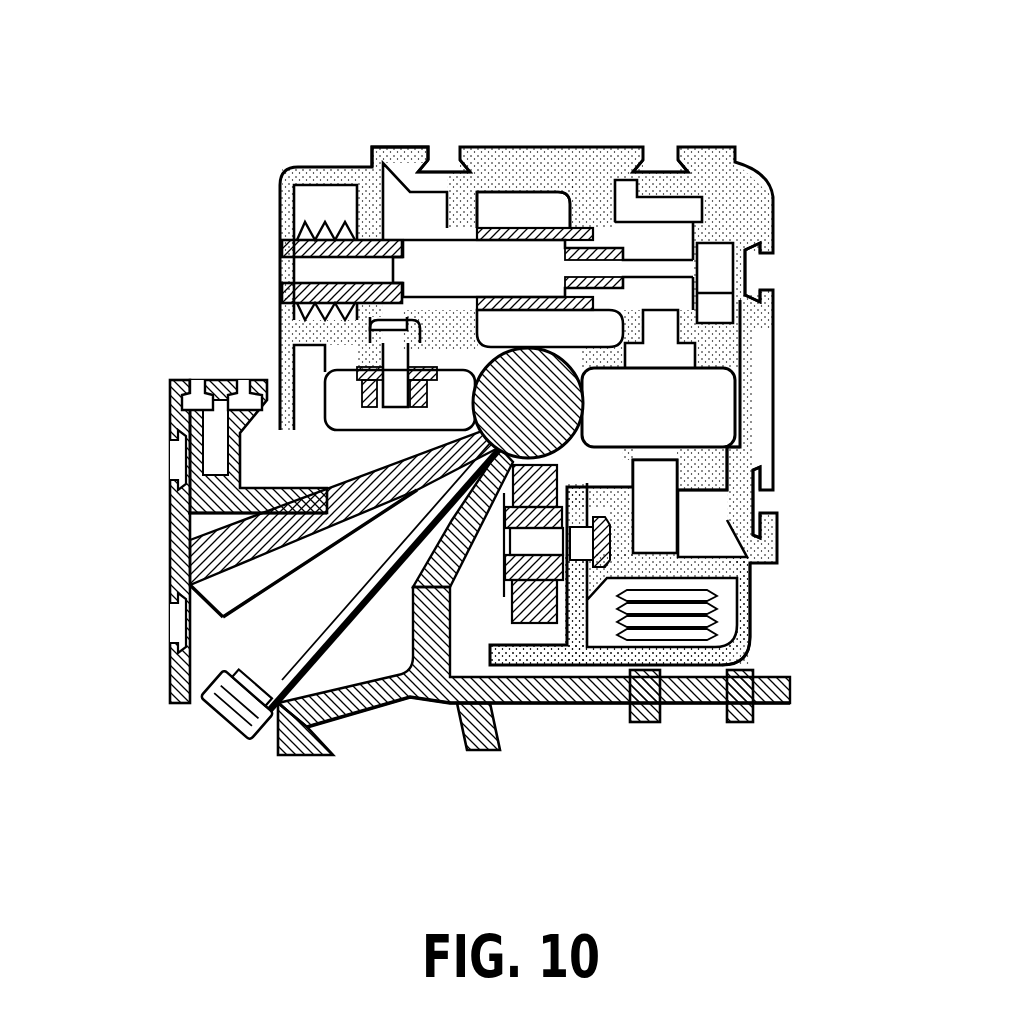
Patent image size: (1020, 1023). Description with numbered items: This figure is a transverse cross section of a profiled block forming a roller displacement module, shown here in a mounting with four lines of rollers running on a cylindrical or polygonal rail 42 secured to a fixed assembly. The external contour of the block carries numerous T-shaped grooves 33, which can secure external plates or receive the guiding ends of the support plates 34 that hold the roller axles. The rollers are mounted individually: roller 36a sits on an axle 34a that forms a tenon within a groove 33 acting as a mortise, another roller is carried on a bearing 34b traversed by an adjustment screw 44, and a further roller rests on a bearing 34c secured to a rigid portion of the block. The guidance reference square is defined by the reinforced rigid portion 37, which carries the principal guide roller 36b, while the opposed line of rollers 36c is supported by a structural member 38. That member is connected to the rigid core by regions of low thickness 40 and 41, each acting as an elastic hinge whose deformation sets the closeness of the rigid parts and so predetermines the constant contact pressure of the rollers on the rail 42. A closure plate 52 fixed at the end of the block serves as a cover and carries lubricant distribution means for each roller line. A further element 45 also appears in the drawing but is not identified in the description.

The T-shaped groove 33 is at (442, 157).
The support plate 34 is at (700, 447).
The axle forming a tenon 34a is at (383, 345).
The bearing traversed by an adjustment screw 34b is at (523, 255).
The bearing secured to a rigid portion 34c is at (534, 688).
The roller 36a is at (345, 410).
The roller 36b is at (542, 197).
The roller 36c is at (691, 727).
The rigid portion 37 is at (770, 197).
The structural member 38 is at (354, 603).
The region of low thickness 40 is at (372, 163).
The region of low thickness 41 is at (768, 576).
The rail 42 is at (555, 416).
The adjustment screw 44 is at (292, 237).
The spring 45 is at (333, 220).
The closure plate 52 is at (168, 405).